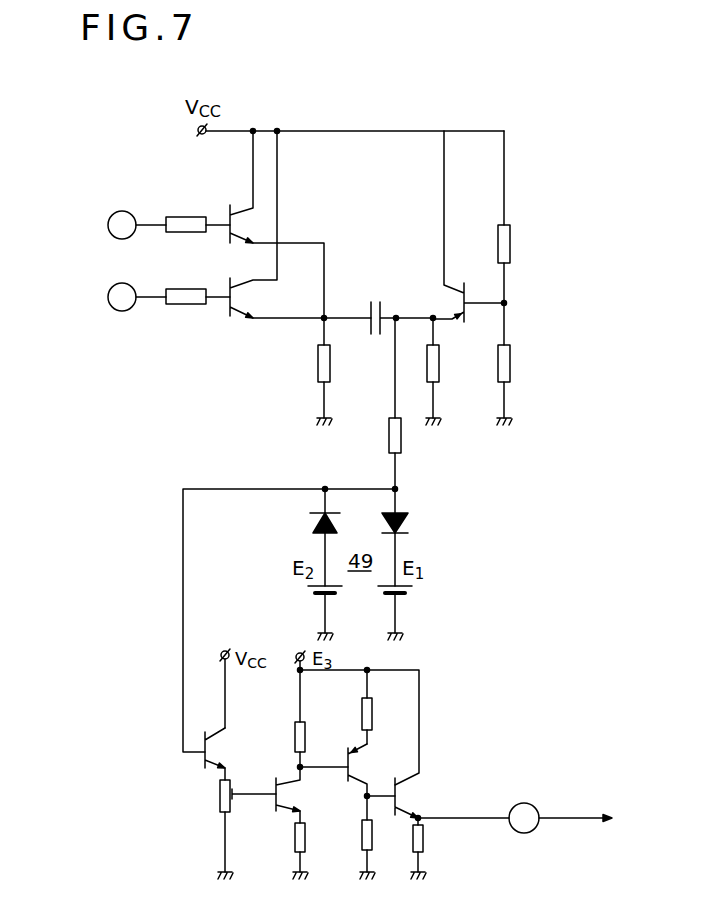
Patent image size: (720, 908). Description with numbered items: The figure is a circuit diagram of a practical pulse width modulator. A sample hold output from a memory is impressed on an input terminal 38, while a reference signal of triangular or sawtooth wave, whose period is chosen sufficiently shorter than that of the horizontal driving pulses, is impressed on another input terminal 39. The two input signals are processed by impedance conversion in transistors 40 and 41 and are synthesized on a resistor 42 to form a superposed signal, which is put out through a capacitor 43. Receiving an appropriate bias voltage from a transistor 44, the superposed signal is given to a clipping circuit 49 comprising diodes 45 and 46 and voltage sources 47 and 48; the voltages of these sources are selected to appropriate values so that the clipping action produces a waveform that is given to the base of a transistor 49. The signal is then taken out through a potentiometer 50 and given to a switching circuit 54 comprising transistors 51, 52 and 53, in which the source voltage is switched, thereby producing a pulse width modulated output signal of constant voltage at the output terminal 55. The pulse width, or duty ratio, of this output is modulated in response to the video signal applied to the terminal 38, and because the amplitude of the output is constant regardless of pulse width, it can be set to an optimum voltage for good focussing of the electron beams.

The input terminal 38 is at (112, 216).
The input terminal 39 is at (112, 285).
The transistor 40 is at (243, 211).
The transistor 41 is at (247, 312).
The resistor 42 is at (318, 358).
The capacitor 43 is at (371, 302).
The transistor 44 is at (456, 313).
The diode 45 is at (407, 523).
The diode 46 is at (313, 528).
The voltage source 47 is at (405, 594).
The voltage source 48 is at (315, 594).
The transistor 49 is at (210, 757).
The potentiometer 50 is at (221, 800).
The transistor 51 is at (288, 810).
The transistor 52 is at (360, 780).
The transistor 53 is at (410, 808).
The amplifier circuit 54 is at (346, 741).
The output terminal 55 is at (525, 803).